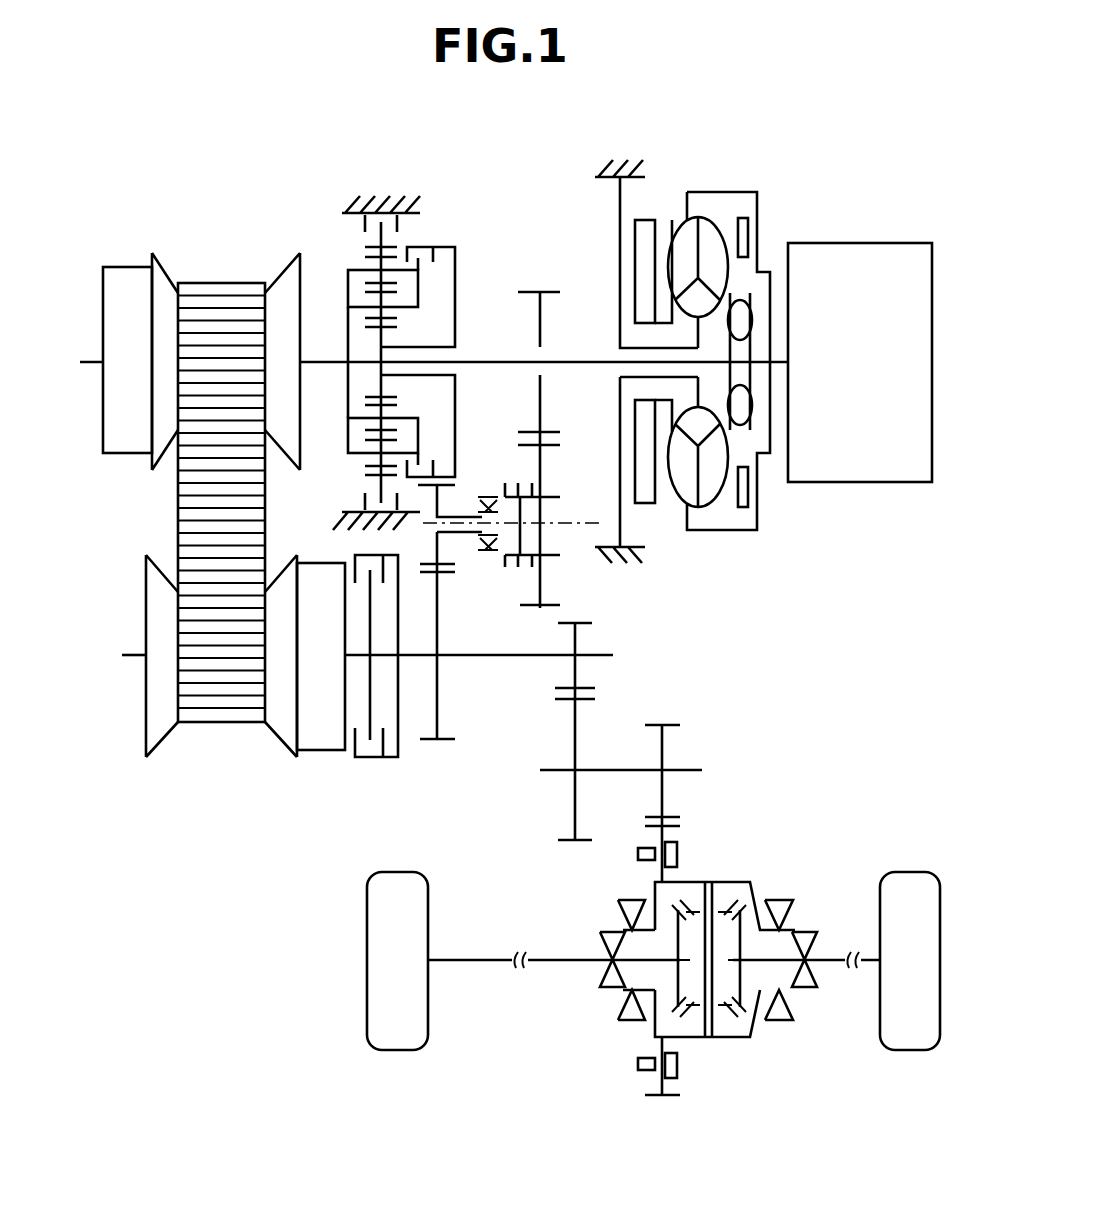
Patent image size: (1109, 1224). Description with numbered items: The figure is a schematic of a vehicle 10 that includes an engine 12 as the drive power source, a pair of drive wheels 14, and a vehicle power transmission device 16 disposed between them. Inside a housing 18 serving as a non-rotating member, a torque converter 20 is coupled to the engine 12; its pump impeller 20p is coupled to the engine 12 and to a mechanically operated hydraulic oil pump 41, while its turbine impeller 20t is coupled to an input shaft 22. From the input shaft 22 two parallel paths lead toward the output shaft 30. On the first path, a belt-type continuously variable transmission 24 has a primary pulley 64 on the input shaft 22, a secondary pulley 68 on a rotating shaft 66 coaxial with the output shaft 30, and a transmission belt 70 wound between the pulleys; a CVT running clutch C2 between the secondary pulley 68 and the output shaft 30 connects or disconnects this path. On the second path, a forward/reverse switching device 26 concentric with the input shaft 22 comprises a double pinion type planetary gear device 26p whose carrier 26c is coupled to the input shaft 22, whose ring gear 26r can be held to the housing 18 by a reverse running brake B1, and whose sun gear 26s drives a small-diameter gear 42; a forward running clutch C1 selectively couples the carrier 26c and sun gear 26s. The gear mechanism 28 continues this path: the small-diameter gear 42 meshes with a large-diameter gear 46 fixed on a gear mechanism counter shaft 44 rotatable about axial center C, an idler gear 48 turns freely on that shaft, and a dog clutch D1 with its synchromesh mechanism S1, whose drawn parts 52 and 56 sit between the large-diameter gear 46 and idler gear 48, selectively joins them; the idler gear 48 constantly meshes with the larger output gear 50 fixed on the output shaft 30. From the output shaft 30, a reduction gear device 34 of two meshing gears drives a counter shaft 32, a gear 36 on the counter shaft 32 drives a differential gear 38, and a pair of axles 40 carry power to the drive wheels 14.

The vehicle 10 is at (796, 116).
The engine 12 is at (850, 252).
The drive wheels 14 is at (396, 885).
The vehicle power transmission device 16 is at (700, 140).
The housing 18 is at (378, 190).
The torque converter 20 is at (702, 174).
The pump impeller 20p is at (680, 230).
The turbine impeller 20t is at (735, 240).
The input shaft 22 is at (560, 358).
The belt-type continuously variable transmission 24 is at (207, 230).
The forward/reverse switching device 26 is at (436, 219).
The ring gear 26r is at (362, 250).
The carrier 26c is at (420, 300).
The sun gear 26s is at (386, 394).
The double pinion type planetary gear device 26p is at (366, 481).
The gear mechanism 28 is at (504, 270).
The output shaft 30 is at (484, 660).
The counter shaft 32 is at (686, 770).
The reduction gear device 34 is at (602, 692).
The gear 36 is at (668, 722).
The differential gear 38 is at (738, 882).
The axles 40 is at (540, 958).
The hydraulic oil pump 41 is at (645, 220).
The small-diameter gear 42 is at (546, 290).
The gear mechanism counter shaft 44 is at (428, 532).
The large-diameter gear 46 is at (534, 612).
The idler gear 48 is at (412, 574).
The output gear 50 is at (426, 744).
The hub 52 is at (534, 558).
The sleeve 56 is at (512, 562).
The primary pulley 64 is at (92, 322).
The rotating shaft 66 is at (128, 658).
The secondary pulley 68 is at (134, 627).
The transmission belt 70 is at (222, 725).
The reverse running brake B1 is at (366, 362).
The forward running clutch C1 is at (418, 348).
The CVT running clutch C2 is at (376, 670).
The dog clutch D1 is at (508, 462).
The synchromesh mechanism S1 is at (484, 497).
The axial center C is at (575, 523).